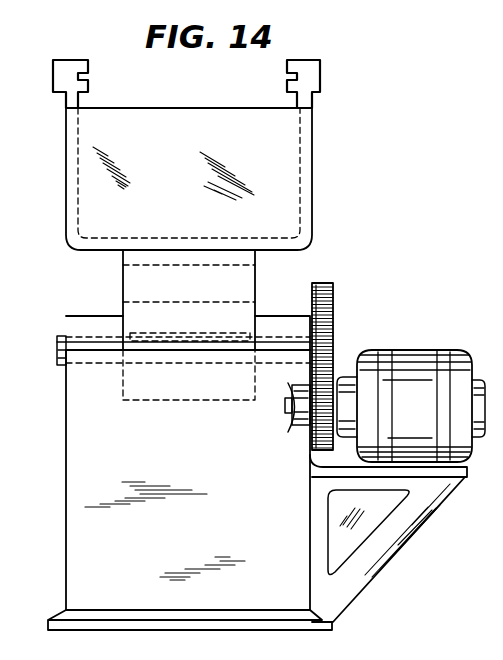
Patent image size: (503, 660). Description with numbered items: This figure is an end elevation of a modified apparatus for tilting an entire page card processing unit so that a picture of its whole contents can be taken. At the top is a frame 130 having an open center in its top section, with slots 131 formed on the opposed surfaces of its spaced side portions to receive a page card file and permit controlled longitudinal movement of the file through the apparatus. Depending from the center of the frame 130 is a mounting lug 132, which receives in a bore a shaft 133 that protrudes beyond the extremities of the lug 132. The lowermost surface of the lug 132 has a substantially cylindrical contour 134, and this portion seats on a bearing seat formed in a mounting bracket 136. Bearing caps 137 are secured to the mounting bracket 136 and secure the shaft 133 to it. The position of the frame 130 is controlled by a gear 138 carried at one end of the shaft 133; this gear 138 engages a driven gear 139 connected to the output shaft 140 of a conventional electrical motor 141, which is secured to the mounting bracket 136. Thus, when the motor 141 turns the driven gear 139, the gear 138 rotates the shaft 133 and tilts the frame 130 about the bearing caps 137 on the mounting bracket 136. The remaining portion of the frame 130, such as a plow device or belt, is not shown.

The frame 130 is at (66, 172).
The slots 131 is at (86, 77).
The mounting lug 132 is at (257, 272).
The shaft 133 is at (57, 340).
The substantially cylindrical contour 134 is at (123, 383).
The mounting bracket 136 is at (66, 398).
The bearing caps 137 is at (90, 316).
The gear 138 is at (334, 310).
The driven gear 139 is at (312, 441).
The output shaft 140 is at (285, 405).
The electrical motor 141 is at (426, 352).